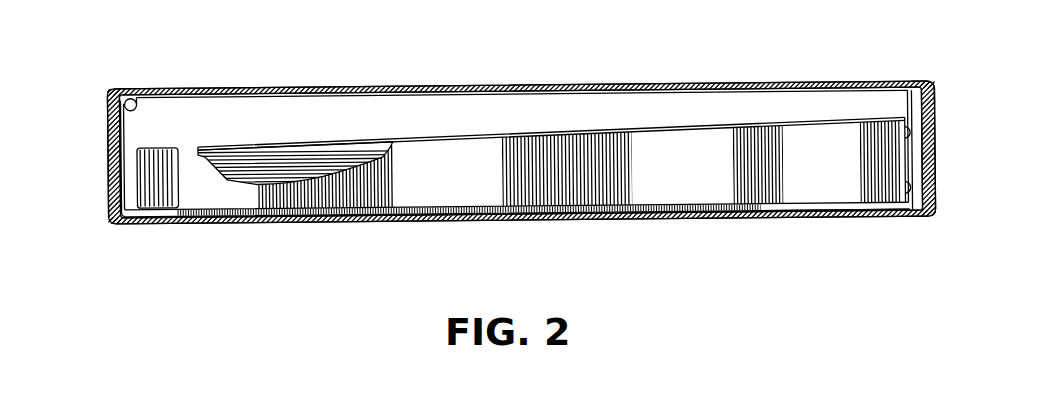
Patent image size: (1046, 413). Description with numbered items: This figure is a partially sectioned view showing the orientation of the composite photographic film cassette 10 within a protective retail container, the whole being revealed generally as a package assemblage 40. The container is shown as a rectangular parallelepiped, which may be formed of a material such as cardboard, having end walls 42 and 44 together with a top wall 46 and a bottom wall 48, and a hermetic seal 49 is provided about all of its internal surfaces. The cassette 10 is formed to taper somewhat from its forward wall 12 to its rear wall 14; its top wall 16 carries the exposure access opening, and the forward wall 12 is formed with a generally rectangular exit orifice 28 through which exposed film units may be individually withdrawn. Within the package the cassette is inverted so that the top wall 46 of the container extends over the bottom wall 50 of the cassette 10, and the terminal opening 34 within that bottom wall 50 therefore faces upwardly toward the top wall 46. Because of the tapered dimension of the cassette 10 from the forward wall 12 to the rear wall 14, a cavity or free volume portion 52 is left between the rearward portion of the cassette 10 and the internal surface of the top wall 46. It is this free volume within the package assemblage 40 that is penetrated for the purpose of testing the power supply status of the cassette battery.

The cassette 10 is at (418, 200).
The forward wall 12 is at (908, 148).
The rear wall 14 is at (137, 178).
The top wall 16 is at (630, 222).
The exit orifice 28 is at (936, 169).
The terminal opening 34 is at (286, 145).
The package assemblage 40 is at (745, 220).
The end wall 42 is at (932, 92).
The end wall 44 is at (108, 137).
The top wall 46 is at (562, 86).
The bottom wall 48 is at (557, 223).
The hermetic seal 49 is at (133, 93).
The bottom wall 50 is at (440, 136).
The free volume portion 52 is at (203, 120).